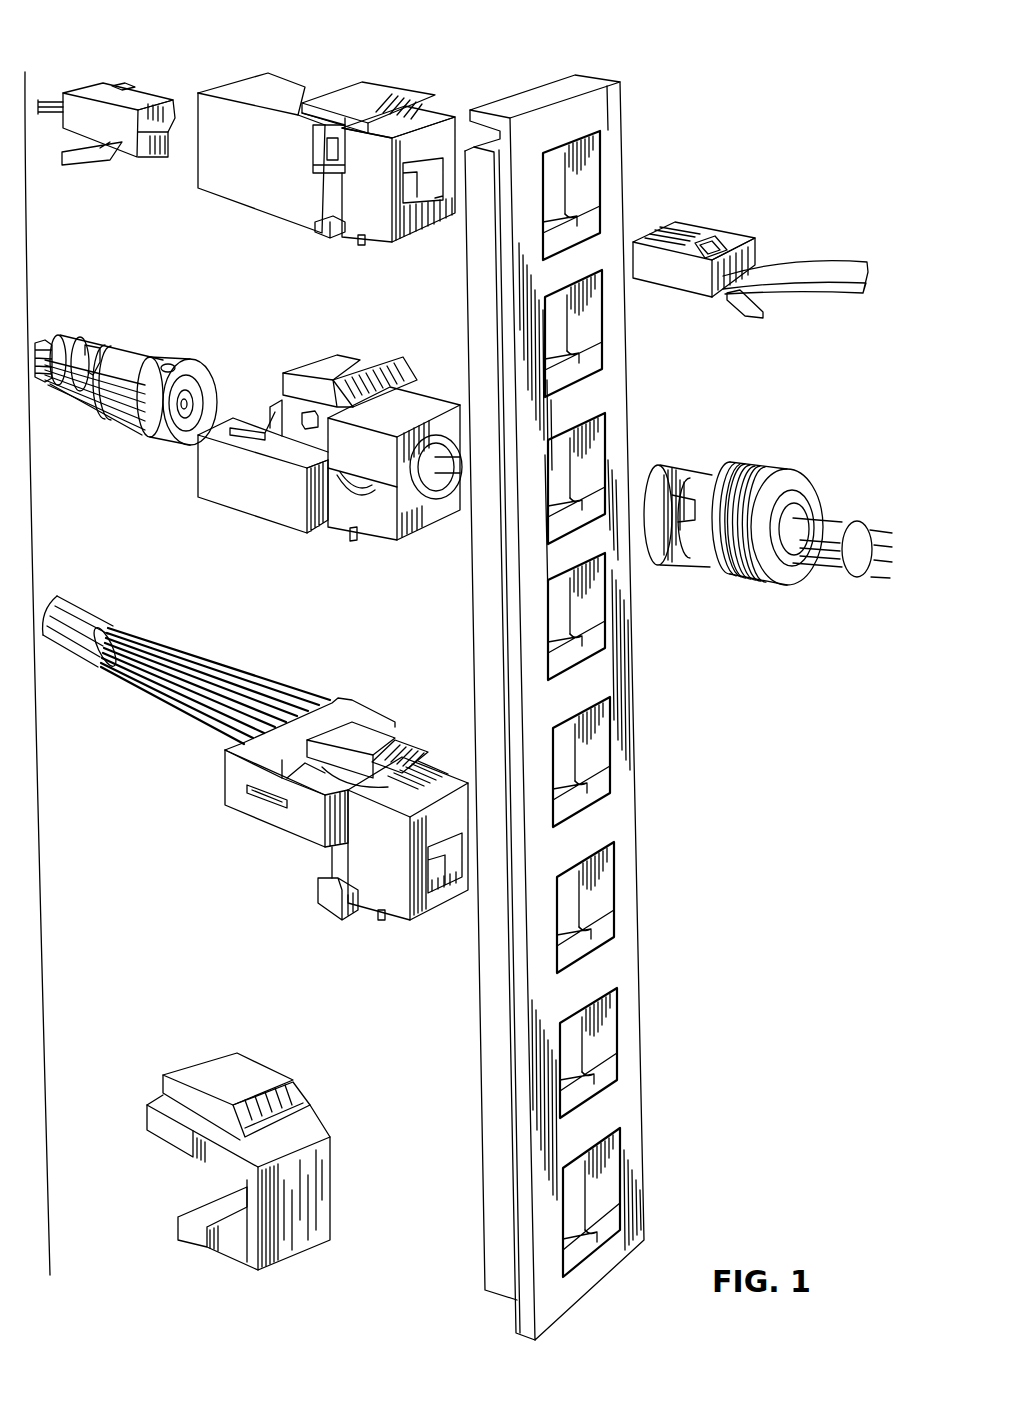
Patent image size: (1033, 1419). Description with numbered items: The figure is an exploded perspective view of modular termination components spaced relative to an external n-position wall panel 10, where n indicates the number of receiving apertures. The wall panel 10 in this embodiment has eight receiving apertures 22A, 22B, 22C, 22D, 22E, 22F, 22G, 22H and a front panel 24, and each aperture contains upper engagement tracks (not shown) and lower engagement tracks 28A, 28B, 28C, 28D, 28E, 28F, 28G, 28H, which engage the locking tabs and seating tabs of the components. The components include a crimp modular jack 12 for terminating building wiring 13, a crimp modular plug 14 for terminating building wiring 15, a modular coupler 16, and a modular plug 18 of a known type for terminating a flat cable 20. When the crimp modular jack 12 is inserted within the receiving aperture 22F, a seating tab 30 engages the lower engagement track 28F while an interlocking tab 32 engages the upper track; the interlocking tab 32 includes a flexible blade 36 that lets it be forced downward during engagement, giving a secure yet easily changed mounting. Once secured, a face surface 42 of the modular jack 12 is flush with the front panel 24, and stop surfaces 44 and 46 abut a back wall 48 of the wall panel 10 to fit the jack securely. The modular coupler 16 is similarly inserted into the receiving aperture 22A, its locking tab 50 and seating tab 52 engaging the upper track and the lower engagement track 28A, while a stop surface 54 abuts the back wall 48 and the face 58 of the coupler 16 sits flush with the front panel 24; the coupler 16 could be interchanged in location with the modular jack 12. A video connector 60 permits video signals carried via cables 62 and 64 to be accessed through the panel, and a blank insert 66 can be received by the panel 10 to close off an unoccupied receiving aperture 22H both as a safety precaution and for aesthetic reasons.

The n-position wall panel 10 is at (566, 707).
The crimp modular jack 12 is at (255, 772).
The building wiring 13 is at (93, 623).
The crimp modular plug 14 is at (106, 151).
The building wiring 15 is at (46, 120).
The modular coupler 16 is at (361, 172).
The modular plug 18 is at (750, 247).
The flat cable 20 is at (815, 272).
The receiving aperture 22A is at (623, 195).
The receiving aperture 22B is at (630, 333).
The receiving aperture 22C is at (631, 472).
The receiving aperture 22D is at (630, 616).
The receiving aperture 22E is at (631, 759).
The receiving aperture 22F is at (635, 905).
The receiving aperture 22G is at (647, 1044).
The receiving aperture 22H is at (648, 1192).
The front panel 24 is at (622, 812).
The lower engagement track 28A is at (575, 203).
The lower engagement track 28B is at (577, 347).
The lower engagement track 28C is at (580, 490).
The lower engagement track 28D is at (580, 630).
The lower engagement track 28E is at (585, 778).
The lower engagement track 28F is at (589, 927).
The lower engagement track 28G is at (592, 1073).
The lower engagement track 28H is at (595, 1218).
The seating tab 30 is at (373, 917).
The interlocking tab 32 is at (400, 743).
The flexible blade 36 is at (362, 733).
The face surface 42 is at (443, 912).
The stop surface 44 is at (325, 847).
The stop surface 46 is at (427, 753).
The back wall 48 is at (478, 1008).
The locking tab 50 is at (425, 87).
The seating tab 52 is at (362, 243).
The stop surface 54 is at (328, 155).
The face 58 is at (438, 130).
The video connector 60 is at (262, 522).
The cable 62 is at (52, 343).
The cable 64 is at (870, 577).
The blank insert 66 is at (312, 1212).